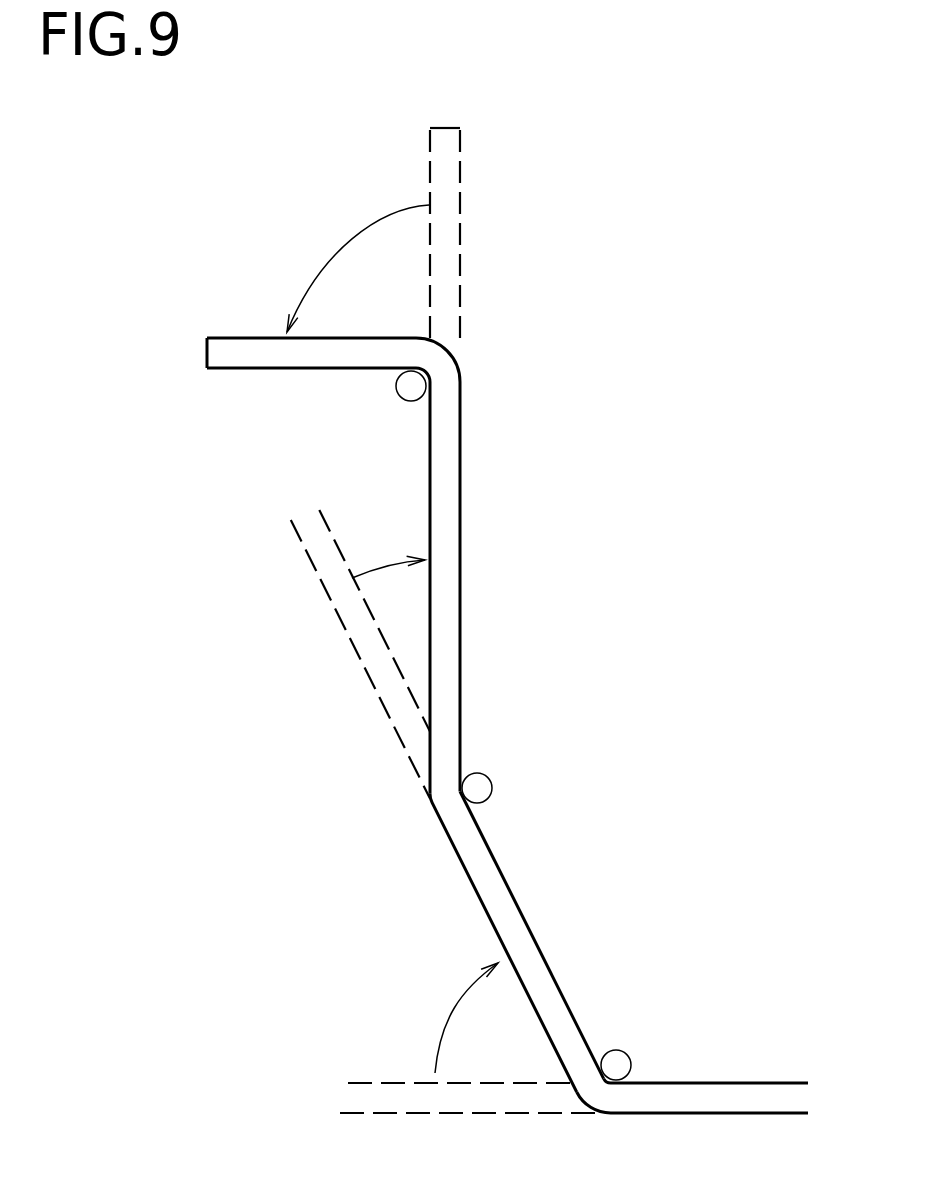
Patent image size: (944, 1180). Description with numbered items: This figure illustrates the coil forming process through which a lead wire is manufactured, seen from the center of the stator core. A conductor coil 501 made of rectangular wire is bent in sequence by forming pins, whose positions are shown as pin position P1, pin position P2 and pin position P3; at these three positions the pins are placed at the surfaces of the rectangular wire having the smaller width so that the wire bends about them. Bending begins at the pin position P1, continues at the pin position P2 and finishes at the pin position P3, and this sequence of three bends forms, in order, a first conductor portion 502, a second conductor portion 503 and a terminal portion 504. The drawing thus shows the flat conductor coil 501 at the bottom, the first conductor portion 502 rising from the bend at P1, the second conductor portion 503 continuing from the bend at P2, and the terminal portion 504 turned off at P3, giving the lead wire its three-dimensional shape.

The conductor coil 501 is at (673, 1100).
The first conductor portion 502 is at (528, 950).
The second conductor portion 503 is at (455, 503).
The terminal portion 504 is at (253, 352).
The pin position P1 is at (622, 1052).
The pin position P2 is at (488, 780).
The pin position P3 is at (396, 390).